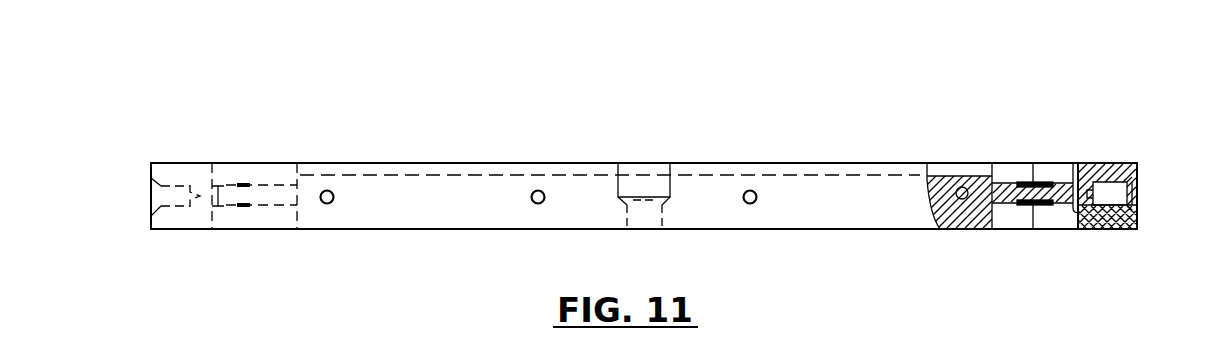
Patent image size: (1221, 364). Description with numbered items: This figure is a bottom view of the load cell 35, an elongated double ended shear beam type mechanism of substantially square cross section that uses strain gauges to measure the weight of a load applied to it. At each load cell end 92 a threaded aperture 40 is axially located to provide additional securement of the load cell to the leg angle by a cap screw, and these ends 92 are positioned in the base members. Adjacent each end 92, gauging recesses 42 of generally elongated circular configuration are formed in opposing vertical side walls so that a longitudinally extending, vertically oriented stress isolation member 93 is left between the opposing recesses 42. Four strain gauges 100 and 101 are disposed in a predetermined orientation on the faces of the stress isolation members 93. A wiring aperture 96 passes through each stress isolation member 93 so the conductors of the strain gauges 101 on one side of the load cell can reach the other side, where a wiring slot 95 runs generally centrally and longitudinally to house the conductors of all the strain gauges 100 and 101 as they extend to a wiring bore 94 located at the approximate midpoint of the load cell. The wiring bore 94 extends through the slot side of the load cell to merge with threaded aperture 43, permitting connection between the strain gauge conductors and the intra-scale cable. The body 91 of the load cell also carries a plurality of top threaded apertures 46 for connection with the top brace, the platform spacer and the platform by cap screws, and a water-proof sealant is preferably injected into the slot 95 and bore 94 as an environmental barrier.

The load cell 35 is at (1110, 79).
The threaded aperture 40 is at (151, 196).
The gauging recess 42 is at (1008, 172).
The threaded aperture 43 is at (645, 230).
The top threaded aperture 46 is at (327, 205).
The bar body 91 is at (440, 220).
The load cell end 92 is at (175, 226).
The stress isolation member 93 is at (1057, 180).
The wiring bore 94 is at (647, 178).
The wiring slot 95 is at (531, 163).
The wiring aperture 96 is at (1140, 224).
The strain gauge 100 is at (248, 190).
The strain gauge 101 is at (245, 210).